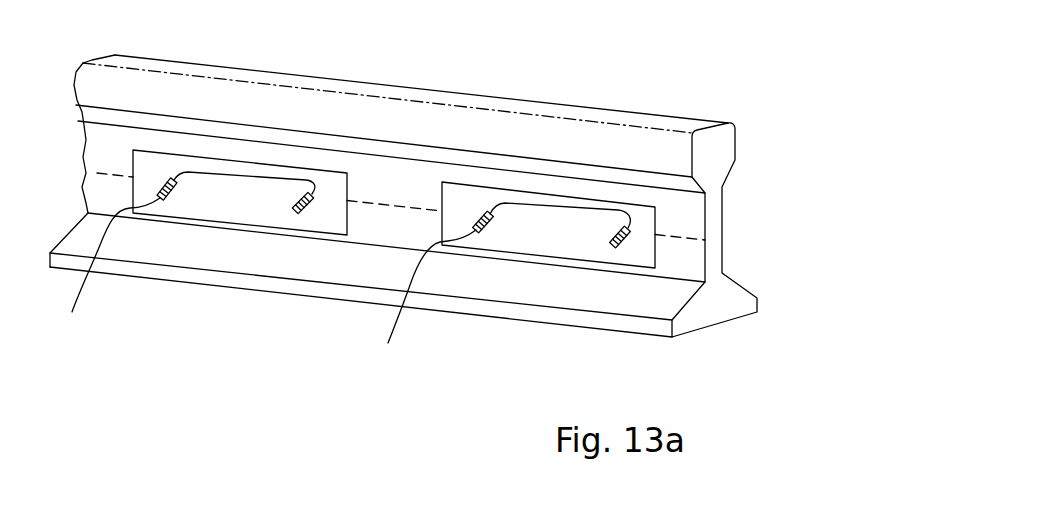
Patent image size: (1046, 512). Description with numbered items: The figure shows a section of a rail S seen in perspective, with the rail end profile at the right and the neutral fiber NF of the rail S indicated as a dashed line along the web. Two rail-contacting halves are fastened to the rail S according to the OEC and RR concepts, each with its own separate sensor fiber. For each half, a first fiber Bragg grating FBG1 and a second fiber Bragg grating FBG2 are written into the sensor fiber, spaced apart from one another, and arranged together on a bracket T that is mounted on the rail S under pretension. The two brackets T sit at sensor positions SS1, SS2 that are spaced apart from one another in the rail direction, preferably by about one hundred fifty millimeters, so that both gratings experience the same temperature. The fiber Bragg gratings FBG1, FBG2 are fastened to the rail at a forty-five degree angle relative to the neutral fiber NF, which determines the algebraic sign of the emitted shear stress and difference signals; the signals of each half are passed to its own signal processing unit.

The rail S is at (733, 215).
The neutral fiber NF is at (688, 240).
The bracket T is at (236, 207).
The first fiber Bragg grating FBG1 is at (172, 203).
The second fiber Bragg grating FBG2 is at (297, 212).
The first sensor position SS1 is at (487, 200).
The second sensor position SS2 is at (636, 224).